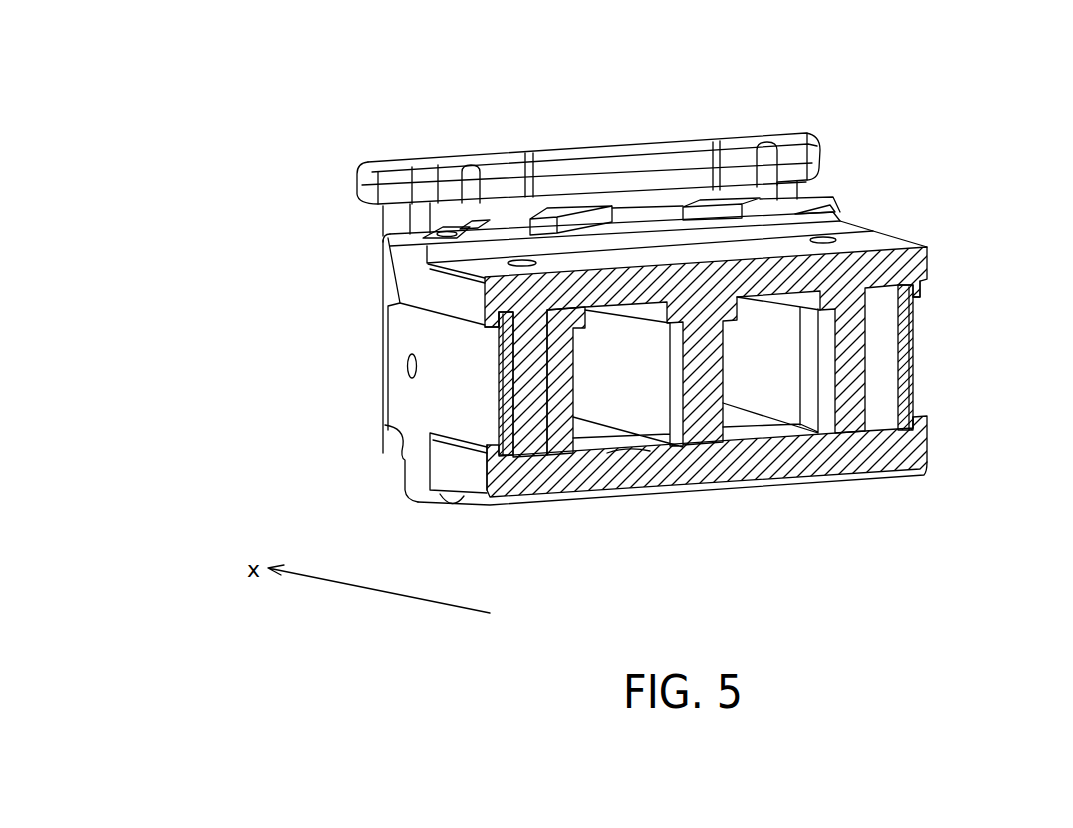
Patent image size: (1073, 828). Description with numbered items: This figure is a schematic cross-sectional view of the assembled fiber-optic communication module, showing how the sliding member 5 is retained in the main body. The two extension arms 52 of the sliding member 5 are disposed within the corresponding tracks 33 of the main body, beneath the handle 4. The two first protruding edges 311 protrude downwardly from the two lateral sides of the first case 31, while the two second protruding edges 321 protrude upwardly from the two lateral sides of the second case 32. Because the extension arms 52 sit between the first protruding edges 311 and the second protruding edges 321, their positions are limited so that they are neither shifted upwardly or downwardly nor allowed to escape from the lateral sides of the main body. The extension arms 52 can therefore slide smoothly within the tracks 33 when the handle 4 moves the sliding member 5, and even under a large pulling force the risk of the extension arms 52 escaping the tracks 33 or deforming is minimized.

The handle 4 is at (704, 147).
The first case 31 is at (870, 240).
The first protruding edges 311 is at (493, 323).
The second case 32 is at (757, 468).
The second protruding edges 321 is at (489, 459).
The tracks 33 is at (520, 387).
The extension arms 52 is at (908, 358).
The sliding member 5 is at (405, 412).